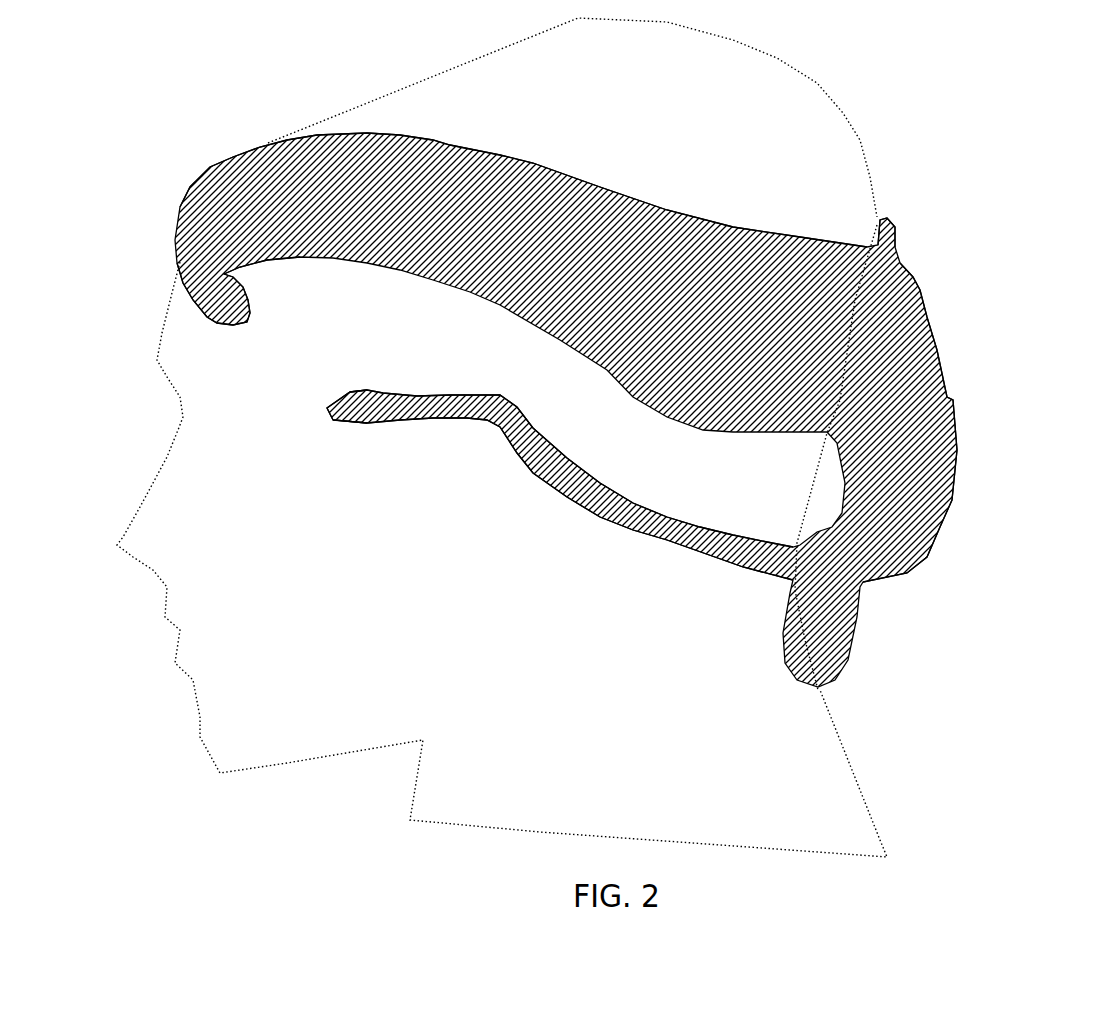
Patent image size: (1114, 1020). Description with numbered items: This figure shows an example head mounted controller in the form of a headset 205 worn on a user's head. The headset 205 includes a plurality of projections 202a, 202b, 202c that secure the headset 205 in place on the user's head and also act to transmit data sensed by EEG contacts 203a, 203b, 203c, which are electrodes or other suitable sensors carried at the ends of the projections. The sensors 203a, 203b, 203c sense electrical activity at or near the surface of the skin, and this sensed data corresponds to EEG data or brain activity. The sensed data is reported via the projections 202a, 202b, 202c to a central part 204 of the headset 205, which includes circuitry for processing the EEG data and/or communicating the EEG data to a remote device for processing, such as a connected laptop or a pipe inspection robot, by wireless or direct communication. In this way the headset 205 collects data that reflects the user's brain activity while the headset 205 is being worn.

The projection 202a is at (890, 222).
The projection 202b is at (263, 143).
The projection 202c is at (443, 417).
The EEG contact 203a is at (243, 272).
The EEG contact 203b is at (232, 327).
The EEG contact 203c is at (333, 423).
The central part 204 is at (953, 390).
The headset 205 is at (1015, 305).